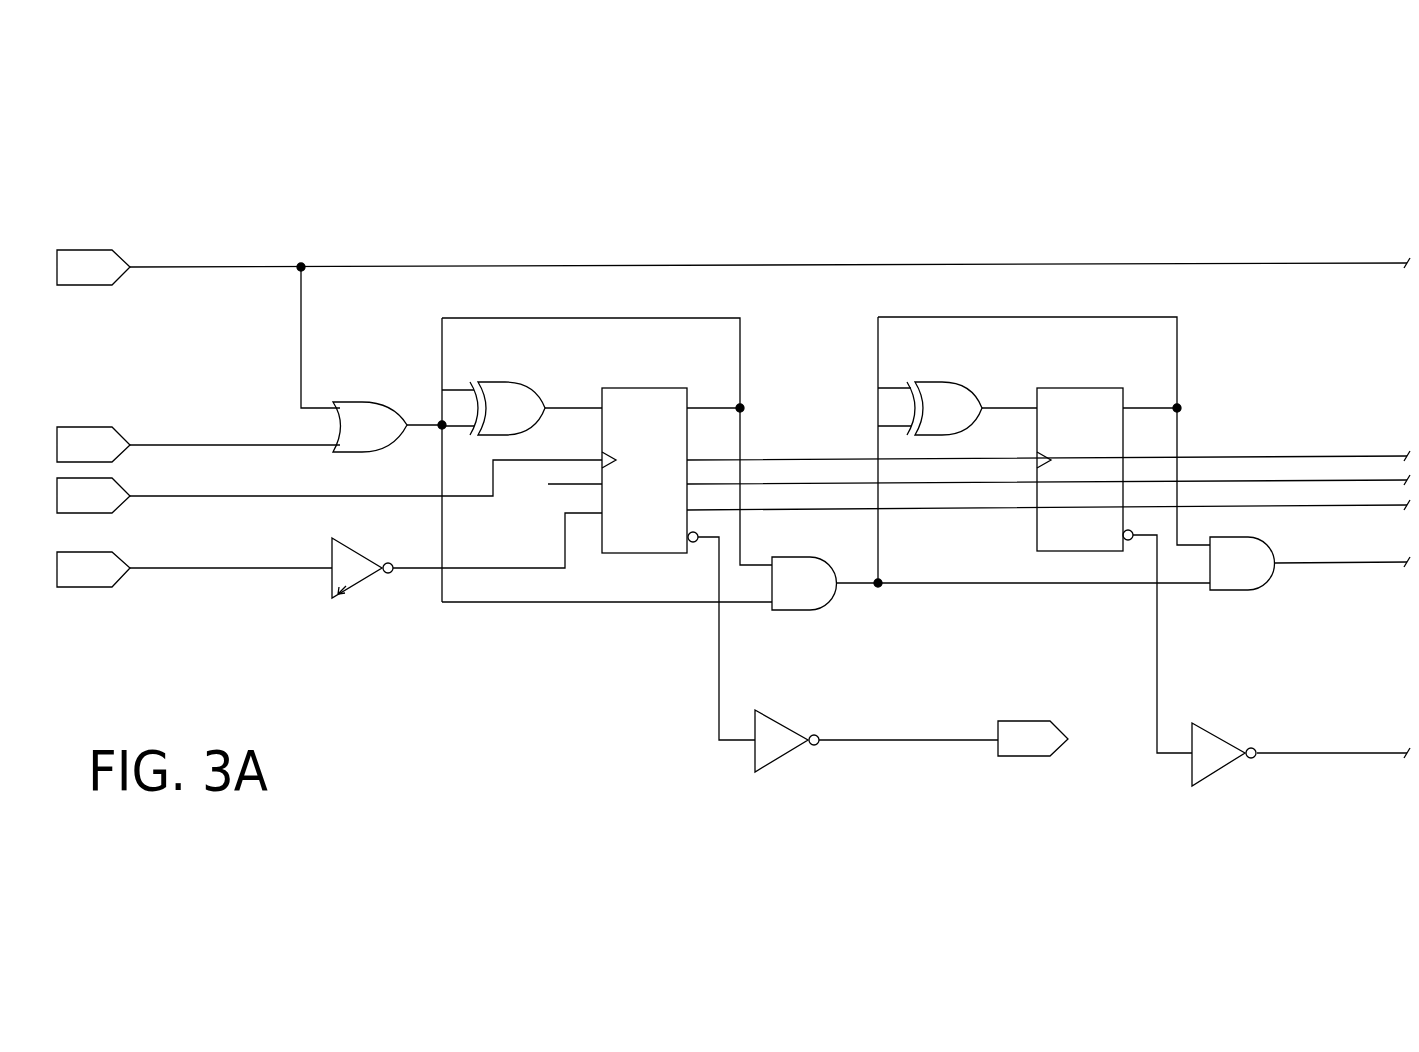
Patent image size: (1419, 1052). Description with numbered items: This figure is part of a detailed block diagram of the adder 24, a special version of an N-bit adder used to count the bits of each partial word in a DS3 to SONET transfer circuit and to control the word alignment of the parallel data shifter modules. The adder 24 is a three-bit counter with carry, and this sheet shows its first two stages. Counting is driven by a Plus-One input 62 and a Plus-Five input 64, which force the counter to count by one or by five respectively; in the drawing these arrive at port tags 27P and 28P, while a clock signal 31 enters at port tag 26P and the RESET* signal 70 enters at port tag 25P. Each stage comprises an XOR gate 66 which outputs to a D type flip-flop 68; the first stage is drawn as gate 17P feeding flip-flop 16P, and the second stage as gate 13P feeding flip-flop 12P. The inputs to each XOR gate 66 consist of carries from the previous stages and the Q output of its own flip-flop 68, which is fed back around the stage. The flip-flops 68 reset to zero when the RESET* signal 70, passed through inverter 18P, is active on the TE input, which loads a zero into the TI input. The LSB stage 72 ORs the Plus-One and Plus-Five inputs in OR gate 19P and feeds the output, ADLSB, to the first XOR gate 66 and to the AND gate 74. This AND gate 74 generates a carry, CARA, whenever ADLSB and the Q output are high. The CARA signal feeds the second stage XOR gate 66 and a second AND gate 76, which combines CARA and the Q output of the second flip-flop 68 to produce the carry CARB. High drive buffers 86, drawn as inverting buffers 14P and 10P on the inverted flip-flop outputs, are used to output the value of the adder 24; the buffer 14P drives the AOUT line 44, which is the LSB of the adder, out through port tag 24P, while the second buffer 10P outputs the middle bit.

The adder 24 is at (464, 252).
The Plus 5 input 64 is at (388, 265).
The Plus 1 input 62 is at (298, 440).
The clock signal line 31 is at (305, 493).
The RESET* signal 70 is at (307, 572).
The XOR gate 66 is at (739, 387).
The D type flip-flop 68 is at (864, 446).
The LSB stage 72 is at (618, 610).
The AND gate 74 is at (822, 611).
The AND gate 76 is at (1258, 589).
The high drive buffers 86 is at (1082, 748).
The AOUT output line 44 is at (972, 742).
The input port 28P is at (93, 267).
The input port 27P is at (93, 444).
The clock input port 26P is at (93, 495).
The reset input port 25P is at (93, 569).
The OR gate 19P is at (389, 414).
The inverter 18P is at (467, 555).
The exclusive OR gate 17P is at (522, 395).
The flip-flop 16P is at (646, 458).
The inverter 14P is at (802, 754).
The exclusive OR gate 13P is at (957, 394).
The flip-flop 12P is at (1109, 457).
The inverter 10P is at (1301, 743).
The output port 24P is at (1033, 738).